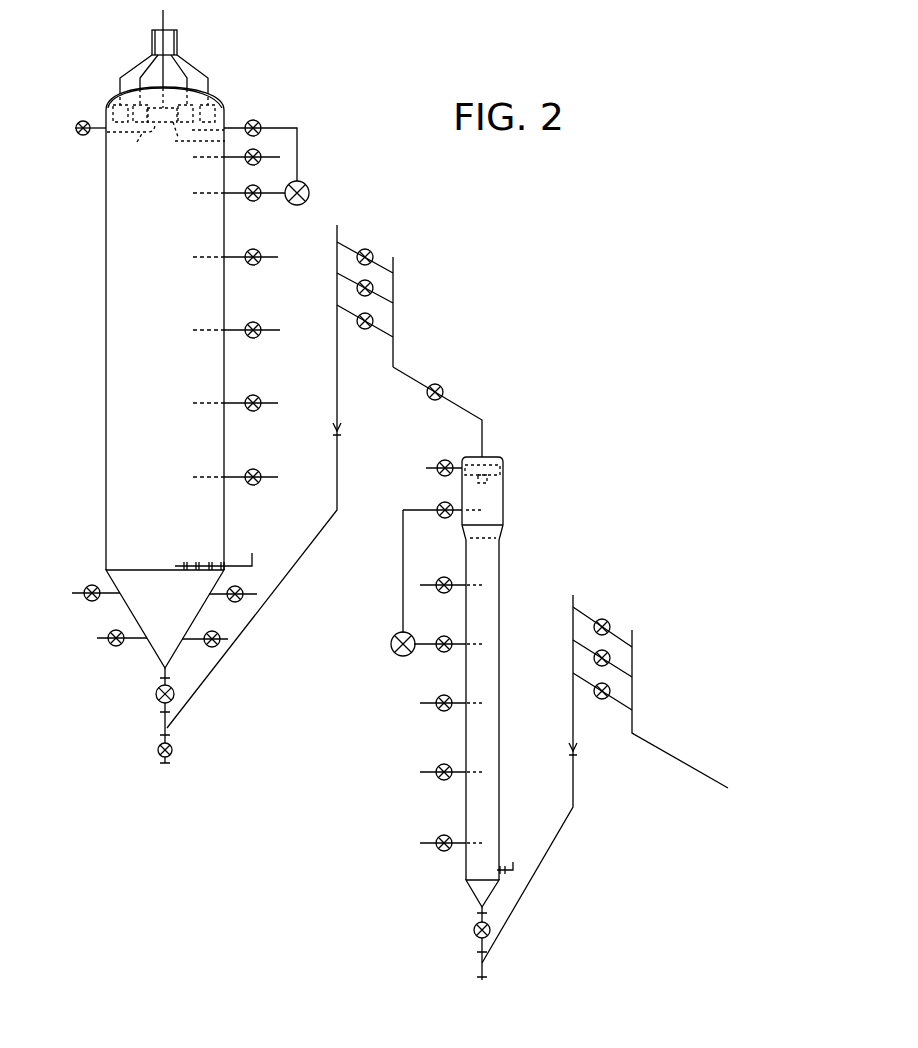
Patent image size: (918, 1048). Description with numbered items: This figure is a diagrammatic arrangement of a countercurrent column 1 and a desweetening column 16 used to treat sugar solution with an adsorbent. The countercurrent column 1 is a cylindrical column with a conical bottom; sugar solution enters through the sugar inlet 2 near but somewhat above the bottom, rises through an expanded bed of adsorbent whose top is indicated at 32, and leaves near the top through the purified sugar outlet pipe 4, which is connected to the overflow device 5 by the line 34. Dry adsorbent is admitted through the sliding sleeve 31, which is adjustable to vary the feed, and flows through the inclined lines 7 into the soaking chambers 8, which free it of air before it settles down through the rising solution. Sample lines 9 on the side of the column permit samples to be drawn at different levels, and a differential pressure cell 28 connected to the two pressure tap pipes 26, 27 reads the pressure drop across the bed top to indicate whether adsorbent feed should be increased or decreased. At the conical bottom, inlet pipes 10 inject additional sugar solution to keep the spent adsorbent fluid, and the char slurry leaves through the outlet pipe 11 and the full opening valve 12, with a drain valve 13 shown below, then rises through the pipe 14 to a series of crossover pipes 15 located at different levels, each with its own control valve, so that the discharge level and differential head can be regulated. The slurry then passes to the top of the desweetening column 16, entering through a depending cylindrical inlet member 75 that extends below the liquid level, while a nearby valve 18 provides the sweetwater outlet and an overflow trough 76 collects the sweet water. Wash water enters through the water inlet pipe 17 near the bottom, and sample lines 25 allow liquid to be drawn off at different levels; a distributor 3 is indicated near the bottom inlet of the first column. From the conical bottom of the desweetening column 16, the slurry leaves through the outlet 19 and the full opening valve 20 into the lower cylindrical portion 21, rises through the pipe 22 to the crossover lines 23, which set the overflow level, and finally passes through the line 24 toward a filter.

The countercurrent column 1 is at (90, 275).
The sugar inlet 2 is at (237, 565).
The feed distributor 3 is at (193, 563).
The purified sugar outlet pipe 4 is at (98, 133).
The overflow device 5 is at (186, 129).
The lines 7 is at (128, 66).
The soaking chambers 8 is at (219, 104).
The sample lines 9 is at (228, 158).
The inlet pipes 10 is at (118, 598).
The outlet pipe 11 is at (165, 678).
The full opening valve 12 is at (158, 700).
The drain valve 13 is at (165, 728).
The pipe 14 is at (283, 585).
The crossover pipes 15 is at (383, 298).
The desweetening column 16 is at (448, 356).
The water inlet pipe 17 is at (503, 868).
The sweetwater outlet 18 is at (427, 468).
The outlet 19 is at (480, 913).
The full opening valve 20 is at (474, 934).
The lower cylindrical portion 21 is at (480, 963).
The pipe 22 is at (531, 890).
The crossover lines 23 is at (622, 640).
The line 24 is at (703, 775).
The sample lines 25 is at (455, 592).
The pressure tap pipe 26 is at (240, 127).
The pressure tap pipe 27 is at (281, 198).
The differential pressure cell 28 is at (306, 184).
The sliding sleeve 31 is at (178, 38).
The top of the expanded bed 32 is at (222, 142).
The line 34 is at (165, 141).
The cylindrical inlet member 75 is at (500, 481).
The overflow trough 76 is at (502, 534).